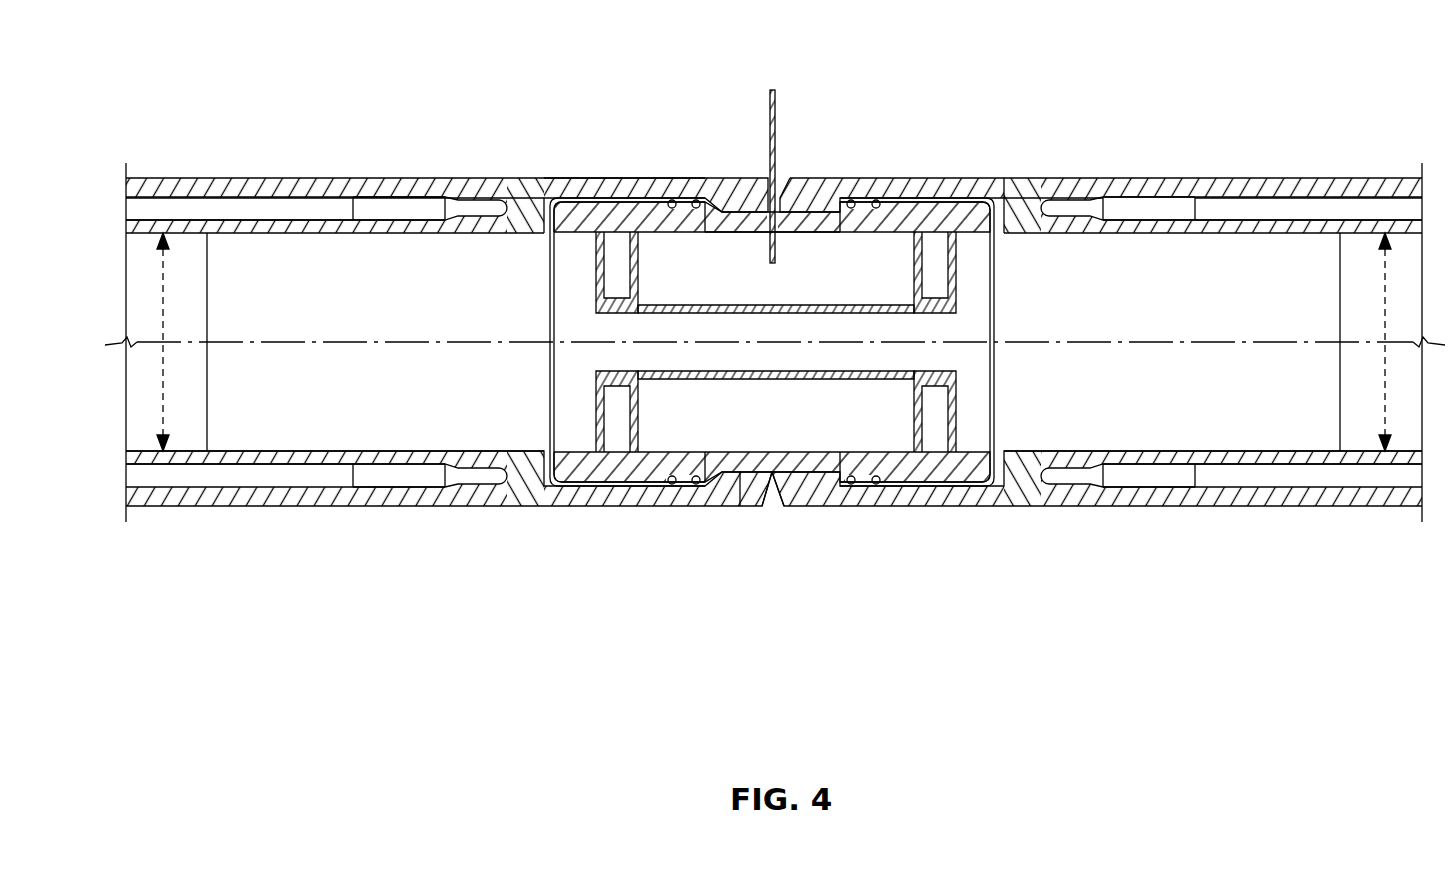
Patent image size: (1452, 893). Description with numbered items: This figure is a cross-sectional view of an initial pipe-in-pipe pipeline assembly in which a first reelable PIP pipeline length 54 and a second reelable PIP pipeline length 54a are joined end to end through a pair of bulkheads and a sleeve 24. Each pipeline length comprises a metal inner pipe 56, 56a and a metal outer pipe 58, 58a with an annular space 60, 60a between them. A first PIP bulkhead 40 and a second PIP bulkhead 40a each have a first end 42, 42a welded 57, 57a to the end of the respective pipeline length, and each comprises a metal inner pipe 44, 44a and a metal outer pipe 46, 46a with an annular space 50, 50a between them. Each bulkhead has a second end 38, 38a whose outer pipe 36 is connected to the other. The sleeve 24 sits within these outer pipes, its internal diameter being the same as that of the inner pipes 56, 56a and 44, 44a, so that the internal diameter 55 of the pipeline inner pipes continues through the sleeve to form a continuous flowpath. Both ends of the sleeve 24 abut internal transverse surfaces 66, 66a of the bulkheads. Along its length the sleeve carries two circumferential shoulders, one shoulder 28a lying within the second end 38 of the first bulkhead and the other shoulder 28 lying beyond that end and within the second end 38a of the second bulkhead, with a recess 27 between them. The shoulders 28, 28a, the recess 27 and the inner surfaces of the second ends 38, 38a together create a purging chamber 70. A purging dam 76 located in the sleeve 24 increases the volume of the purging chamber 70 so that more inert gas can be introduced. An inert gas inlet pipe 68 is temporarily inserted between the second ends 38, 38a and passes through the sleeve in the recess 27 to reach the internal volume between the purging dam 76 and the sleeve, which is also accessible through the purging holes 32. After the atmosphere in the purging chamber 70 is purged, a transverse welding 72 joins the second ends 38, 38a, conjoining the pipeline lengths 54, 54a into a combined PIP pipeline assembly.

The sleeve 24 is at (660, 433).
The recess 27 is at (743, 475).
The shoulder 28 is at (950, 400).
The shoulder 28a is at (570, 470).
The purging holes 32 is at (707, 267).
The outer pipe 36 is at (622, 170).
The second end 38 is at (675, 160).
The second end 38a is at (856, 160).
The first PIP bulkhead 40 is at (533, 168).
The second PIP bulkhead 40a is at (1018, 176).
The first end 42 is at (515, 83).
The first end 42a is at (1172, 97).
The metal inner pipe 44 is at (300, 240).
The metal inner pipe 44a is at (1238, 243).
The metal outer pipe 46 is at (372, 198).
The metal outer pipe 46a is at (1130, 205).
The annular space 50 is at (357, 200).
The annular space 50a is at (1160, 205).
The first reelable PIP pipeline length 54 is at (222, 160).
The second reelable PIP pipeline length 54a is at (1330, 175).
The internal diameter 55 is at (163, 395).
The metal inner pipe 56 is at (187, 235).
The metal inner pipe 56a is at (1367, 447).
The weld 57 is at (215, 242).
The inner wall line 57a is at (1193, 178).
The metal outer pipe 58 is at (188, 180).
The metal outer pipe 58a is at (1350, 178).
The annular space 60 is at (262, 212).
The annular space 60a is at (1312, 210).
The internal transverse surface 66 is at (553, 205).
The internal transverse surface 66a is at (990, 200).
The inert gas inlet pipe 68 is at (773, 92).
The purging chamber 70 is at (803, 480).
The transverse welding 72 is at (773, 515).
The purging dam 76 is at (640, 262).